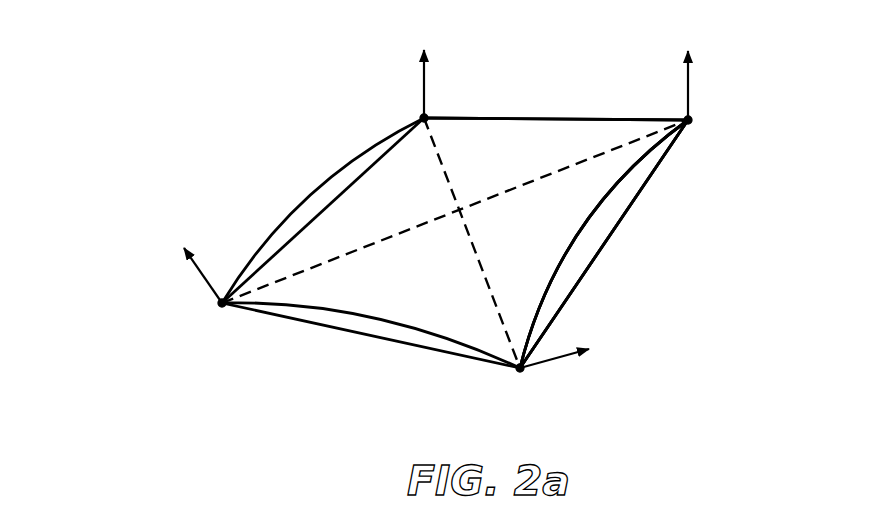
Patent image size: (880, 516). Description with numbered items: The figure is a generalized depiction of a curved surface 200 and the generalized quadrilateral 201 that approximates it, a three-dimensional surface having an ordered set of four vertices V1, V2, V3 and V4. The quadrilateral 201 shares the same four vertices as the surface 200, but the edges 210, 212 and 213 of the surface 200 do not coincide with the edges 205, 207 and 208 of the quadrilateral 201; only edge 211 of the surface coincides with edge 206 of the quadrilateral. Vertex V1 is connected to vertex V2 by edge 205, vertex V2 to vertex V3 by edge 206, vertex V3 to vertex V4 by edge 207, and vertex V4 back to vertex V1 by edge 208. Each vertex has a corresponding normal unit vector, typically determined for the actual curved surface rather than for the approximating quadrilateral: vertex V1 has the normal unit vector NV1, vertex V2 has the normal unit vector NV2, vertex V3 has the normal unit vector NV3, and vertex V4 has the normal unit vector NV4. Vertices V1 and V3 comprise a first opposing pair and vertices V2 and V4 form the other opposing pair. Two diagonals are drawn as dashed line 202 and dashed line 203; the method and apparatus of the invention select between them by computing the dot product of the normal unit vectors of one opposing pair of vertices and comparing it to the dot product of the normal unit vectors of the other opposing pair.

The curved surface 200 is at (532, 264).
The generalized quadrilateral 201 is at (563, 290).
The dashed line 202 is at (610, 158).
The dashed line 203 is at (497, 318).
The edge of the quadrilateral 205 is at (365, 172).
The edge of the quadrilateral 206 is at (535, 118).
The edge of the quadrilateral 207 is at (563, 313).
The edge of the quadrilateral 208 is at (402, 348).
The edge of the surface 210 is at (307, 188).
The edge of the surface 211 is at (610, 118).
The edge of the surface 212 is at (595, 218).
The edge of the surface 213 is at (363, 315).
The vertex V1 is at (217, 310).
The vertex V2 is at (433, 113).
The vertex V3 is at (695, 118).
The vertex V4 is at (520, 377).
The normal unit vector NV1 is at (185, 277).
The normal unit vector NV2 is at (417, 95).
The normal unit vector NV3 is at (693, 77).
The normal unit vector NV4 is at (563, 365).